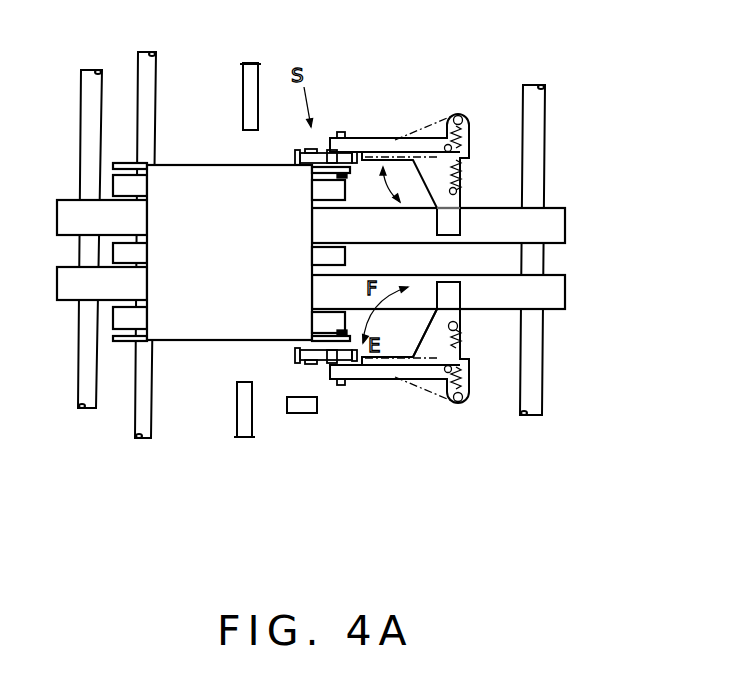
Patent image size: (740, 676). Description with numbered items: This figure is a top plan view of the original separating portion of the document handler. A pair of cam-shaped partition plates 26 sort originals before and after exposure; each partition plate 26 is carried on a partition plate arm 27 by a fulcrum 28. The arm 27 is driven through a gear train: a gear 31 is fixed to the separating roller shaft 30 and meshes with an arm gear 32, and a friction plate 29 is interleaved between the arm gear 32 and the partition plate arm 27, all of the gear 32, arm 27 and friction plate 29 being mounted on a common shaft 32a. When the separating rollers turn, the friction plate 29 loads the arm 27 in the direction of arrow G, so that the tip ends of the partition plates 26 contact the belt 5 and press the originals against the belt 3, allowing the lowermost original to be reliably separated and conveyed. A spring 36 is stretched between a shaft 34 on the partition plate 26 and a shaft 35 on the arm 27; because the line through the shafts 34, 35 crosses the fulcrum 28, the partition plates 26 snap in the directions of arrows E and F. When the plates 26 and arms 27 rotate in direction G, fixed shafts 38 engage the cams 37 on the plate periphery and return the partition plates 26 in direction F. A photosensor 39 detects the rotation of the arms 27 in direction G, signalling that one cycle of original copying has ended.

The belt 3 is at (65, 220).
The belt 5 is at (115, 192).
The partition plate 26 is at (453, 223).
The partition plate arm 27 is at (390, 138).
The fulcrum 28 is at (466, 140).
The friction plate 29 is at (357, 163).
The separating roller shaft 30 is at (312, 297).
The gear 31 is at (296, 150).
The arm gear 32 is at (340, 153).
The shaft 32a is at (341, 132).
The shaft 34 is at (465, 322).
The shaft 35 is at (462, 115).
The spring 36 is at (457, 150).
The cam 37 is at (424, 338).
The shaft 38 is at (237, 410).
The photosensor 39 is at (298, 414).